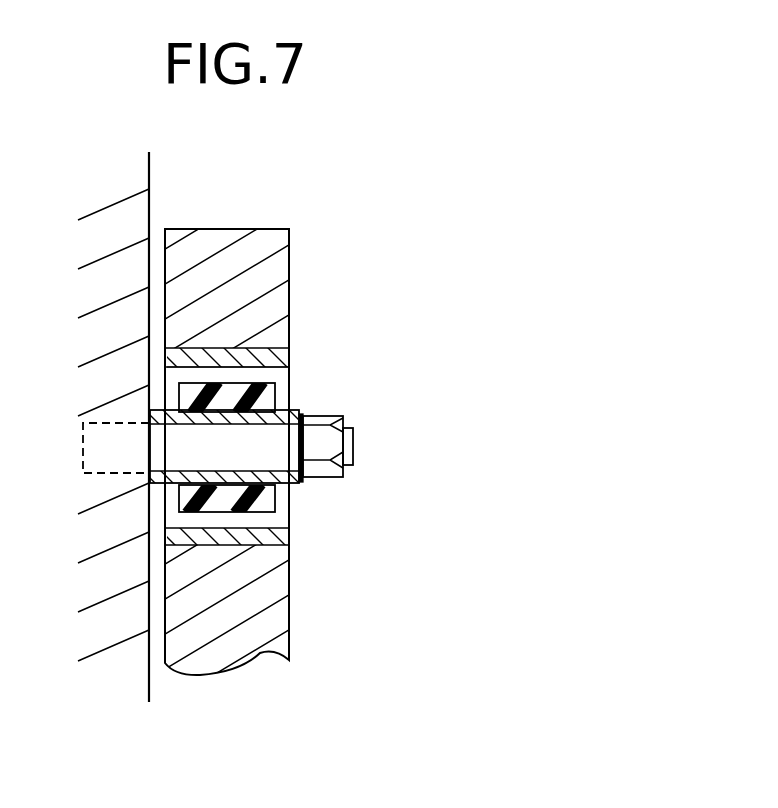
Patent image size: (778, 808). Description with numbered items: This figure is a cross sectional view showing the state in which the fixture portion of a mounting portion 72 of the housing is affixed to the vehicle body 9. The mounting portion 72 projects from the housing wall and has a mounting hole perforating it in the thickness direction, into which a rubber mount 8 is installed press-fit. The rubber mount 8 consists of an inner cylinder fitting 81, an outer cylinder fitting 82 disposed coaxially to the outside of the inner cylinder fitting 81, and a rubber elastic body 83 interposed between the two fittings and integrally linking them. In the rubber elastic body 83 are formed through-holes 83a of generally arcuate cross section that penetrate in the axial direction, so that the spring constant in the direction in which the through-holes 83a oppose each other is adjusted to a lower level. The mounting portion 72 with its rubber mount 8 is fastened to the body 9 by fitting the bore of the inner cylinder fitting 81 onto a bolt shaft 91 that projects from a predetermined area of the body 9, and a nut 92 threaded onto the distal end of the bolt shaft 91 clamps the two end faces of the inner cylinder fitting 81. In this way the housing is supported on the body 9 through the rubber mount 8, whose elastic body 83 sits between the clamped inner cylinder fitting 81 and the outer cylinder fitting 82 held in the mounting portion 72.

The rubber mount 8 is at (293, 508).
The body 9 is at (45, 377).
The mounting portion 72 is at (243, 242).
The inner cylinder fitting 81 is at (300, 415).
The outer cylinder fitting 82 is at (292, 357).
The rubber elastic body 83 is at (275, 398).
The through-hole 83a is at (267, 375).
The bolt shaft 91 is at (347, 442).
The nut 92 is at (325, 470).